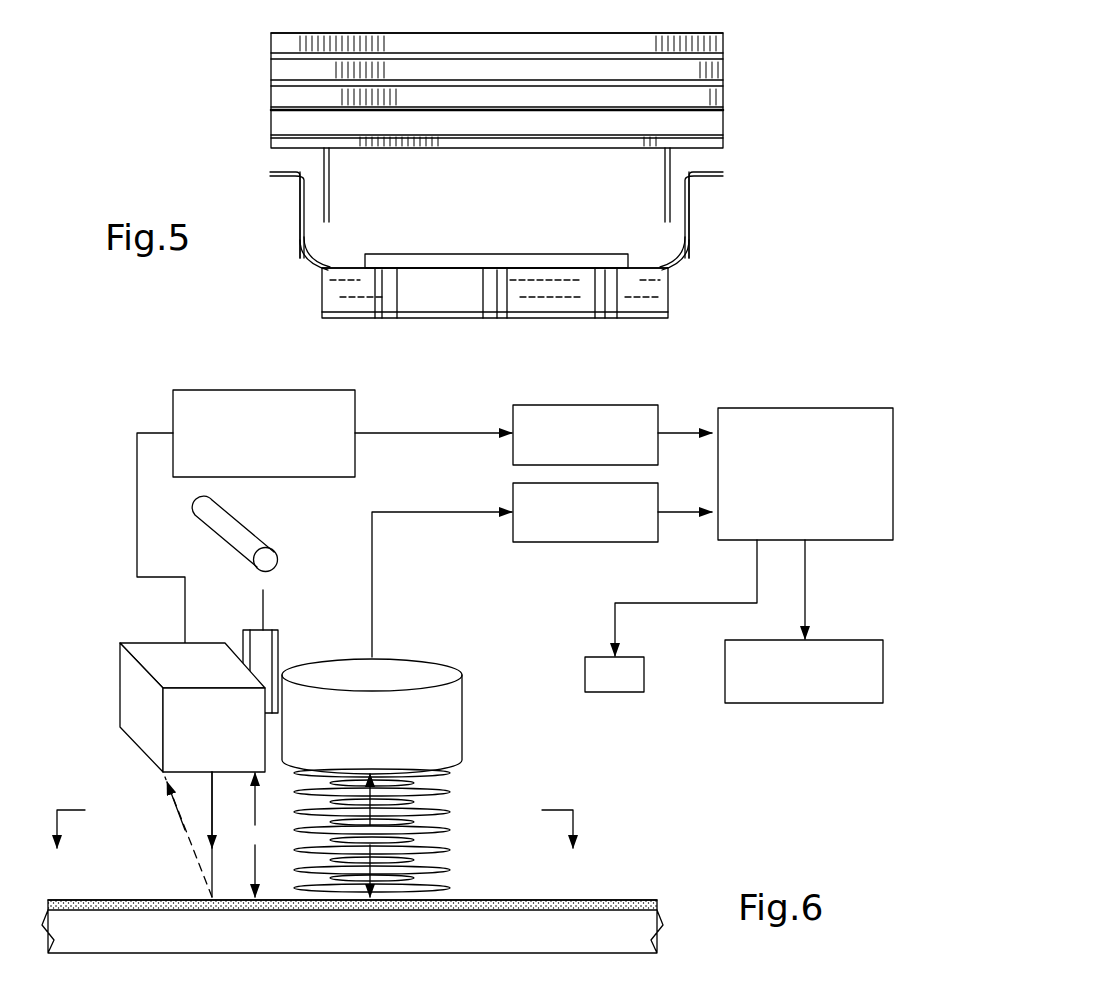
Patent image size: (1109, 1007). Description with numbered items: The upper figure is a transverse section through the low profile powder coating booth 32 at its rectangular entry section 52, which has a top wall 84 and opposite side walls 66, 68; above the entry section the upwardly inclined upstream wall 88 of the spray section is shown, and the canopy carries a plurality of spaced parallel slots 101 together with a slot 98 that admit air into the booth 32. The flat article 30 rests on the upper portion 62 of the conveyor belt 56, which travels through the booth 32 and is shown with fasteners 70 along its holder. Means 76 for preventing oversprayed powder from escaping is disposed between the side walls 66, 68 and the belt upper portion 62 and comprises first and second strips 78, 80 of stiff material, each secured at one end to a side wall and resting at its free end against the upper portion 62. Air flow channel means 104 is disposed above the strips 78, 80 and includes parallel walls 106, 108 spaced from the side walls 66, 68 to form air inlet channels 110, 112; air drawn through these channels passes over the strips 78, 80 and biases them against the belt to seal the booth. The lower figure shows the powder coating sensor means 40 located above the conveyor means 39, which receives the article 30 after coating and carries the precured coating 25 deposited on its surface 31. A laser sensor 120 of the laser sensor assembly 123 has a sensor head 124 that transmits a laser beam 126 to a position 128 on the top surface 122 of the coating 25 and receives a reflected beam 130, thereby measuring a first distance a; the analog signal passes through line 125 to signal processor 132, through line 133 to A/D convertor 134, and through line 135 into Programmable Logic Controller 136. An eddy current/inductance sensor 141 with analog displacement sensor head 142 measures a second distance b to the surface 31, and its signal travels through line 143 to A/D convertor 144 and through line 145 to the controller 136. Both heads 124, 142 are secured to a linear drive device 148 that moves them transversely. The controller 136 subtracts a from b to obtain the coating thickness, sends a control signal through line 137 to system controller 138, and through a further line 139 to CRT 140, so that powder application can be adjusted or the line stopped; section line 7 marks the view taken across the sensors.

In FIG. 6, the coating 25 is at (612, 898).
In FIG. 5, the article 30 is at (458, 253).
In FIG. 6, the article 30 is at (305, 928).
In FIG. 6, the surface of article 31 is at (537, 905).
In FIG. 5, the powder coating booth 32 is at (238, 110).
In FIG. 6, the conveyor means 39 is at (385, 955).
In FIG. 6, the powder coating sensor means 40 is at (77, 530).
In FIG. 5, the entry section 52 is at (770, 172).
In FIG. 5, the conveyor belt 56 is at (322, 295).
In FIG. 5, the upper portion of belt 62 is at (350, 268).
In FIG. 5, the side wall 66 is at (691, 232).
In FIG. 5, the side wall 68 is at (300, 238).
In FIG. 5, the fasteners 70 is at (605, 318).
In FIG. 5, the means for preventing powder escape 76 is at (342, 253).
In FIG. 5, the first strip 78 is at (668, 258).
In FIG. 5, the second strip 80 is at (318, 262).
In FIG. 5, the top wall 84 is at (293, 140).
In FIG. 5, the upstream wall 88 is at (725, 75).
In FIG. 5, the slot 98 is at (705, 125).
In FIG. 5, the slots 101 is at (283, 78).
In FIG. 5, the air flow channel means 104 is at (655, 163).
In FIG. 5, the parallel wall 106 is at (664, 192).
In FIG. 5, the parallel wall 108 is at (331, 195).
In FIG. 5, the air inlet channel 110 is at (692, 210).
In FIG. 5, the air inlet channel 112 is at (300, 203).
In FIG. 6, the laser sensor 120 is at (130, 437).
In FIG. 6, the top surface of coating layer 122 is at (500, 898).
In FIG. 6, the laser sensor assembly 123 is at (157, 355).
In FIG. 6, the sensor head 124 is at (160, 660).
In FIG. 6, the line 125 is at (150, 433).
In FIG. 6, the laser beam 126 is at (210, 835).
In FIG. 6, the position 128 is at (223, 890).
In FIG. 6, the reflected beam 130 is at (185, 835).
In FIG. 6, the signal processor 132 is at (225, 390).
In FIG. 6, the line 133 is at (402, 433).
In FIG. 6, the A/D convertor 134 is at (568, 405).
In FIG. 6, the line 135 is at (672, 433).
In FIG. 6, the Programmable Logic Controller 136 is at (795, 408).
In FIG. 6, the line 137 is at (808, 575).
In FIG. 6, the system controller 138 is at (832, 640).
In FIG. 6, the CRT line 139 is at (723, 603).
In FIG. 6, the CRT 140 is at (612, 692).
In FIG. 6, the eddy current/inductance sensor 141 is at (466, 624).
In FIG. 6, the analog displacement sensor head 142 is at (352, 672).
In FIG. 6, the line 143 is at (470, 512).
In FIG. 6, the A/D convertor 144 is at (565, 542).
In FIG. 6, the line 145 is at (672, 512).
In FIG. 6, the linear drive device 148 is at (228, 540).
In FIG. 6, the section line 7 is at (311, 846).
In FIG. 6, the first distance a is at (256, 835).
In FIG. 6, the second distance b is at (371, 835).